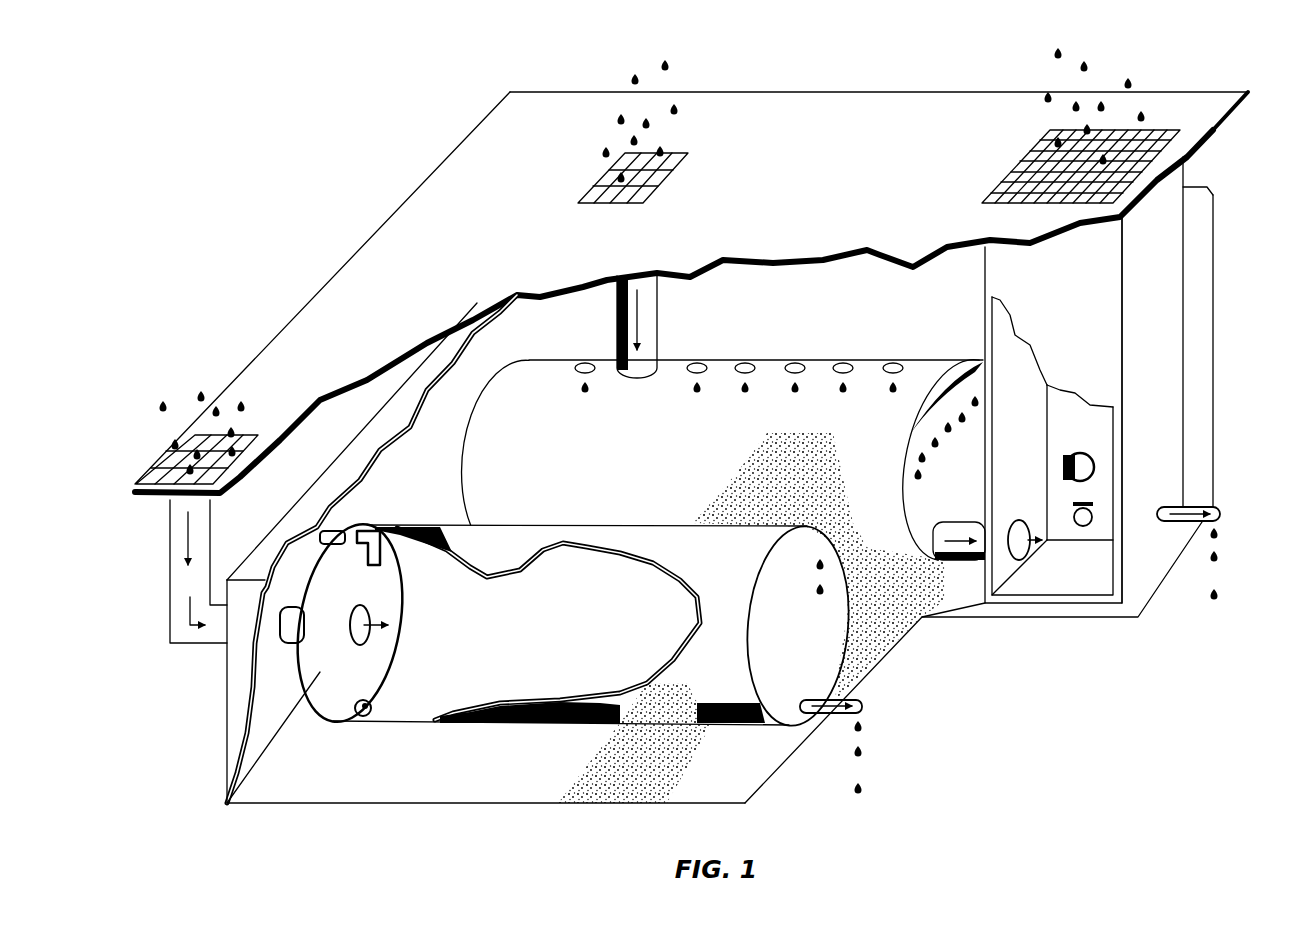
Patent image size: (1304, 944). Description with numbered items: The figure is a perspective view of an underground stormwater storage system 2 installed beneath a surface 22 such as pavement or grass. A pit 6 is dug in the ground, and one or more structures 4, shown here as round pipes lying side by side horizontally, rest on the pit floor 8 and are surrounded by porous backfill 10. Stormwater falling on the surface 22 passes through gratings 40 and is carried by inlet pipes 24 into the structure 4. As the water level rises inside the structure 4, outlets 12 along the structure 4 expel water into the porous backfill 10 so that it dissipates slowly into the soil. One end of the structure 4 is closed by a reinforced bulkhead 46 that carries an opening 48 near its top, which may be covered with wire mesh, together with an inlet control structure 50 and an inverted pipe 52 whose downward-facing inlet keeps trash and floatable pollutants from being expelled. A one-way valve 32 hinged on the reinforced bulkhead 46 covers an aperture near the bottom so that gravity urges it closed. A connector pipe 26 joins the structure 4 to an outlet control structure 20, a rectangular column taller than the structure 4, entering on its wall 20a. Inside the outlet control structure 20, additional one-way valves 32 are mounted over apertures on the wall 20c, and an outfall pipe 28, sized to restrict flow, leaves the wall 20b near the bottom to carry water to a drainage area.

The underground stormwater storage system 2 is at (691, 427).
The structure 4 is at (467, 432).
The pit 6 is at (800, 770).
The excavation floor 8 is at (465, 785).
The porous backfill 10 is at (900, 607).
The outlets 12 is at (712, 363).
The outlet control structure 20 is at (1099, 387).
The wall 20a is at (1019, 418).
The wall 20b is at (1165, 600).
The wall 20c is at (1080, 462).
The surface 22 is at (822, 118).
The inlet pipes 24 is at (657, 328).
The connector pipe 26 is at (965, 568).
The outfall pipe 28 is at (865, 708).
The one-way valve 32 is at (355, 710).
The grating 40 is at (675, 153).
The reinforced bulkhead 46 is at (318, 672).
The opening 48 is at (935, 418).
The inlet control structure 50 is at (360, 610).
The inverted pipe 52 is at (343, 530).